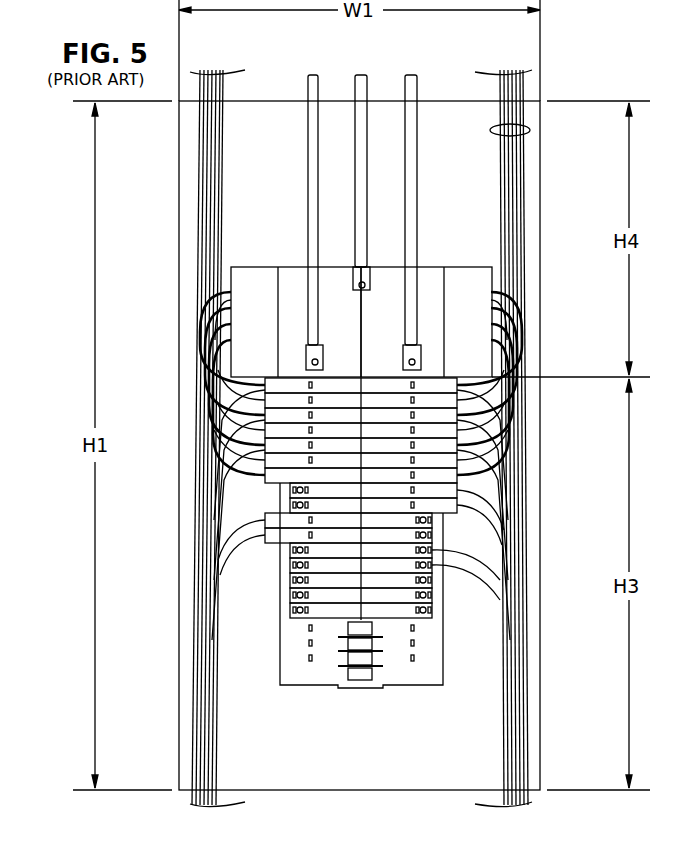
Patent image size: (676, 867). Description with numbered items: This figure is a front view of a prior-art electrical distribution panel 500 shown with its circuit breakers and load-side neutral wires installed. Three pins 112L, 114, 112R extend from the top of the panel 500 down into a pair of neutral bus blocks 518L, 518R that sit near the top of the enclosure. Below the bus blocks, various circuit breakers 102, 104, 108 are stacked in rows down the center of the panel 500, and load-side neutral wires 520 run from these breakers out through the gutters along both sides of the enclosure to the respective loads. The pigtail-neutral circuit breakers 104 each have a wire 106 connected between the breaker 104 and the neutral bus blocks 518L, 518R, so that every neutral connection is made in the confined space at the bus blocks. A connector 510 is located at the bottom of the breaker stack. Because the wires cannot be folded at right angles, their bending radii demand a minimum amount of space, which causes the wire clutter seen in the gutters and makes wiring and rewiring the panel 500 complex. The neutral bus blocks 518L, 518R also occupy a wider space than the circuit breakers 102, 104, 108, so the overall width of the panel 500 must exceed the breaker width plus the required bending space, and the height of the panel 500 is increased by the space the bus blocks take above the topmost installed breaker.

The prior-art electrical distribution panel 500 is at (553, 92).
The load-side neutral wires 520 is at (530, 130).
The left power input pin 112L is at (305, 85).
The center neutral pin 114 is at (367, 80).
The right power input pin 112R is at (417, 85).
The neutral bus block 518L is at (263, 267).
The neutral bus block 518R is at (456, 267).
The wire 106 is at (470, 455).
The pigtail-neutral circuit breakers 104 is at (470, 465).
The circuit breakers 102 is at (470, 506).
The circuit breakers 108 is at (432, 549).
The bottom connector 510 is at (358, 683).